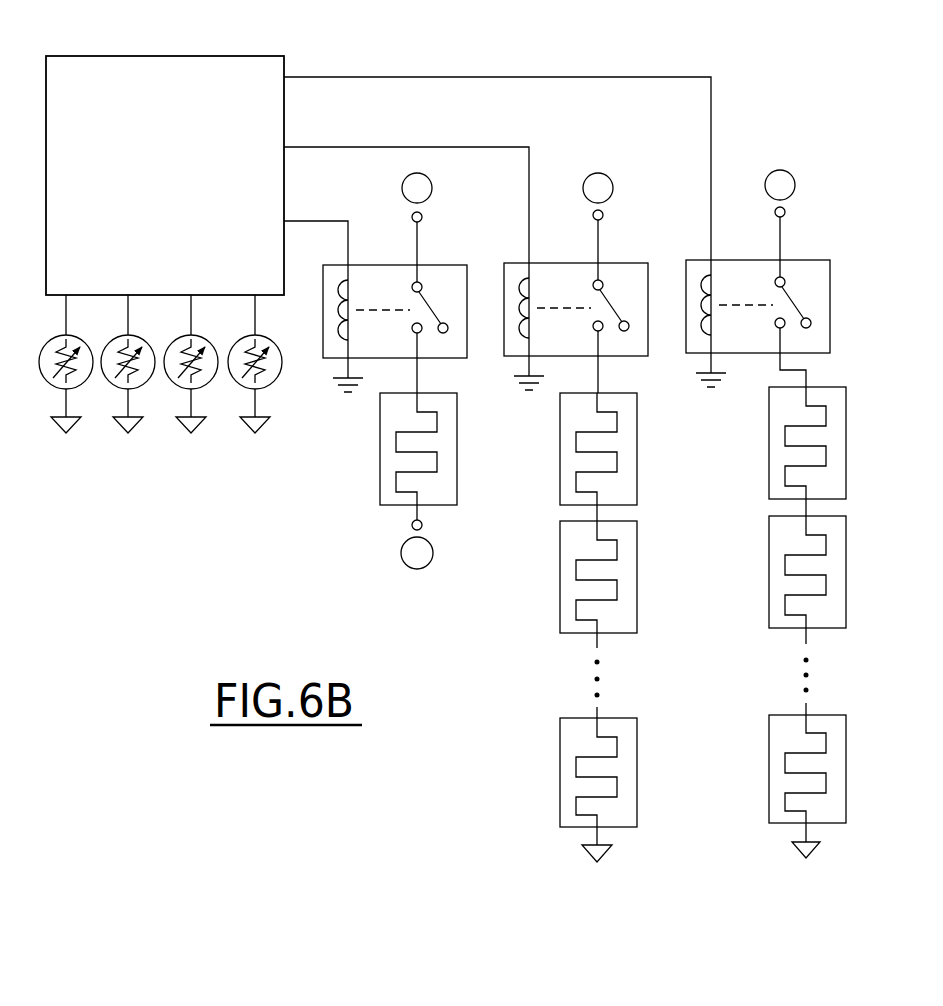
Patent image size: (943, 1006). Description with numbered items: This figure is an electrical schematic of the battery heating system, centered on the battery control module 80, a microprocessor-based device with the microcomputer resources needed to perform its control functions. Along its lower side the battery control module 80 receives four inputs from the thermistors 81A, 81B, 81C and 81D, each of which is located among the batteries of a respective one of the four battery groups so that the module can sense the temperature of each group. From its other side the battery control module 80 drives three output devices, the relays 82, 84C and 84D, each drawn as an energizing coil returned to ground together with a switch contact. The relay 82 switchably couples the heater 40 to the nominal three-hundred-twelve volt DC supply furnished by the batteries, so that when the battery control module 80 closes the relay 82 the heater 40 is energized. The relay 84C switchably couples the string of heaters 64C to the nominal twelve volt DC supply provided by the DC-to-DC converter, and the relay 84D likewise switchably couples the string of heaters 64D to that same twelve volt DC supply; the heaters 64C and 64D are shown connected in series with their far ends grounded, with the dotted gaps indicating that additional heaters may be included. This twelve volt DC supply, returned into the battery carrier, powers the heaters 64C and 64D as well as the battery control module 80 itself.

The battery control module 80 is at (176, 54).
The thermistor 81A is at (45, 342).
The thermistor 81B is at (118, 388).
The thermistor 81C is at (182, 388).
The thermistor 81D is at (246, 388).
The relay 82 is at (448, 263).
The relay 84C is at (644, 242).
The relay 84D is at (826, 240).
The heater 40 is at (378, 445).
The heaters 64C is at (560, 460).
The heaters 64D is at (768, 457).